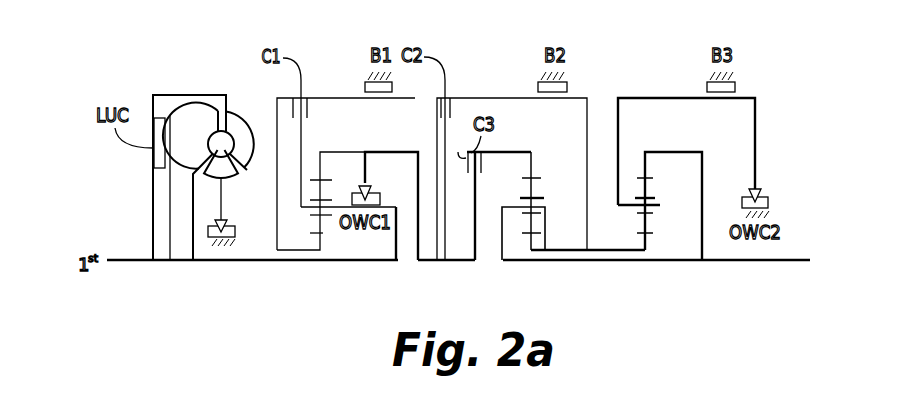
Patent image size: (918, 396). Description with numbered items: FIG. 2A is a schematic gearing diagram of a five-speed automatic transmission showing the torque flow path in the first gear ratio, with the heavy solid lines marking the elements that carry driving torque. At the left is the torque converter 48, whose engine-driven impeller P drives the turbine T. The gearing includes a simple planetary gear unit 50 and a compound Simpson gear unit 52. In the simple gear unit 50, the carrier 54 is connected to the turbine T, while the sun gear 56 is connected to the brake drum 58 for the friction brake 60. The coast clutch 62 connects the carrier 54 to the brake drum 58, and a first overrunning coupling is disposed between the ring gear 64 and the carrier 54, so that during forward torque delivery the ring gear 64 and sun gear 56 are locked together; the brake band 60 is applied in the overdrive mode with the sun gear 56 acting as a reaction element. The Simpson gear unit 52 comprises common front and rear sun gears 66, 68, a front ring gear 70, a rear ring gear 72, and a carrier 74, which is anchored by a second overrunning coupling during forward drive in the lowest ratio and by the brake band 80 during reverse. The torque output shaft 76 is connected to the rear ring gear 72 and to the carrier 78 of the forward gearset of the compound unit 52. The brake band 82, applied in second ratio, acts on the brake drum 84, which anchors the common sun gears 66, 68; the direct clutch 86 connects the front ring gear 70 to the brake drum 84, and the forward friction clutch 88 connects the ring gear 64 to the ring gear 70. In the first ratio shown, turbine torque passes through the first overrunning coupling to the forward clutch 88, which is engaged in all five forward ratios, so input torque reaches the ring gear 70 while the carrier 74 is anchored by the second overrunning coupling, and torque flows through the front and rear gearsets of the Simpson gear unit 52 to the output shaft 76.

The torque converter 48 is at (244, 111).
The simple planetary gear unit 50 is at (407, 152).
The compound Simpson gear unit 52 is at (597, 247).
The carrier 54 is at (311, 236).
The sun gear 56 is at (323, 234).
The brake drum 58 is at (331, 98).
The friction brake 60 is at (365, 84).
The coast clutch 62 is at (308, 110).
The ring gear 64 is at (322, 178).
The front sun gear 66 is at (528, 243).
The rear sun gear 68 is at (646, 242).
The front ring gear 70 is at (537, 175).
The rear ring gear 72 is at (647, 175).
The carrier 74 is at (627, 208).
The torque output shaft 76 is at (728, 260).
The carrier 78 is at (508, 206).
The brake band 80 is at (735, 86).
The brake band 82 is at (567, 86).
The brake drum 84 is at (523, 98).
The direct clutch 86 is at (450, 110).
The forward friction clutch 88 is at (458, 152).